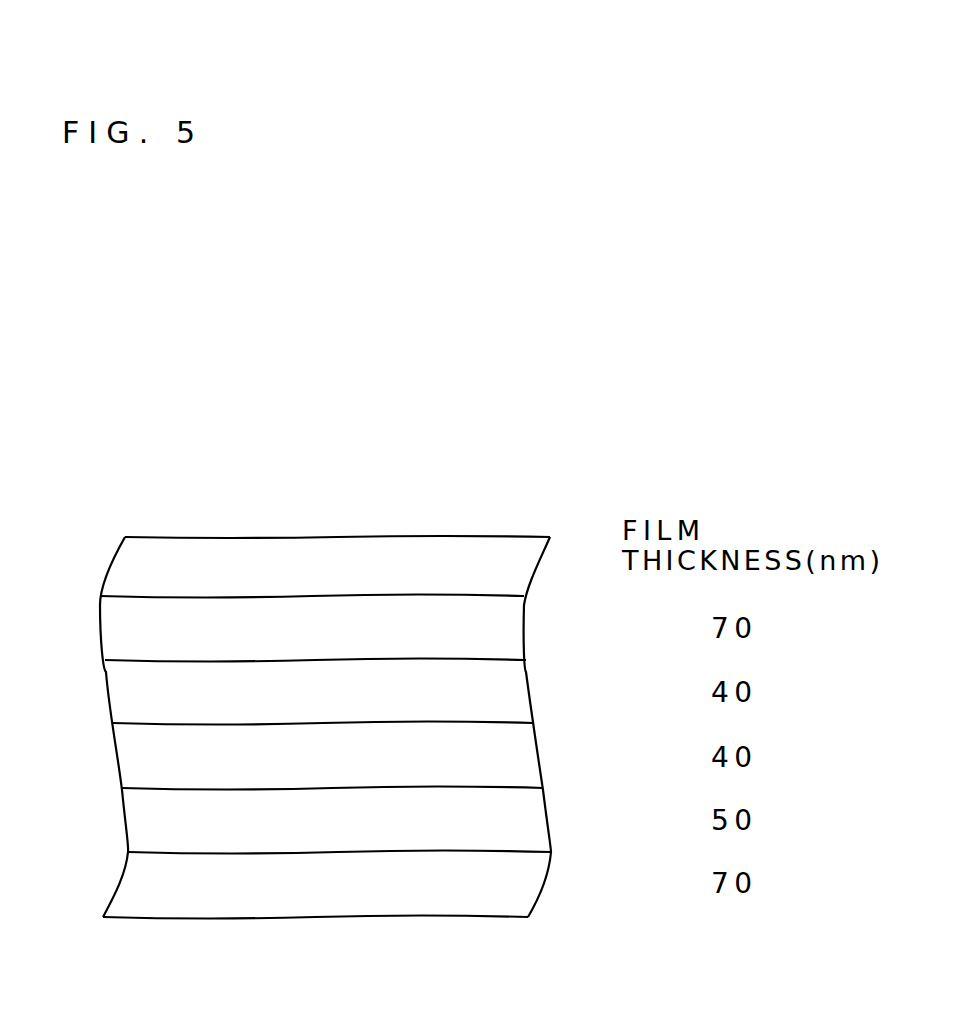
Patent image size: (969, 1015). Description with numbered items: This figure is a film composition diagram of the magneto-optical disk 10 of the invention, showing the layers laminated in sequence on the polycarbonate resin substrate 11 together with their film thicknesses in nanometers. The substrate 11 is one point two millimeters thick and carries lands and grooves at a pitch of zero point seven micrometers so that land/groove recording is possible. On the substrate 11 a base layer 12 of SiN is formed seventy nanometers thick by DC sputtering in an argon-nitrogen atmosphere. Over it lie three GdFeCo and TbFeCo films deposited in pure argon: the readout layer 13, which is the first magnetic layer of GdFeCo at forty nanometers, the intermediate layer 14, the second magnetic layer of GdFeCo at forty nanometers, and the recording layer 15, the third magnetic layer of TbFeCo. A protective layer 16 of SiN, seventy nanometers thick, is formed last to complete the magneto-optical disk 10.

The magneto-optical disk 10 is at (233, 516).
The polycarbonate resin substrate 11 is at (133, 576).
The base layer 12 is at (133, 640).
The readout layer 13 is at (133, 703).
The intermediate layer 14 is at (133, 769).
The recording layer 15 is at (133, 831).
The protective layer 16 is at (133, 894).